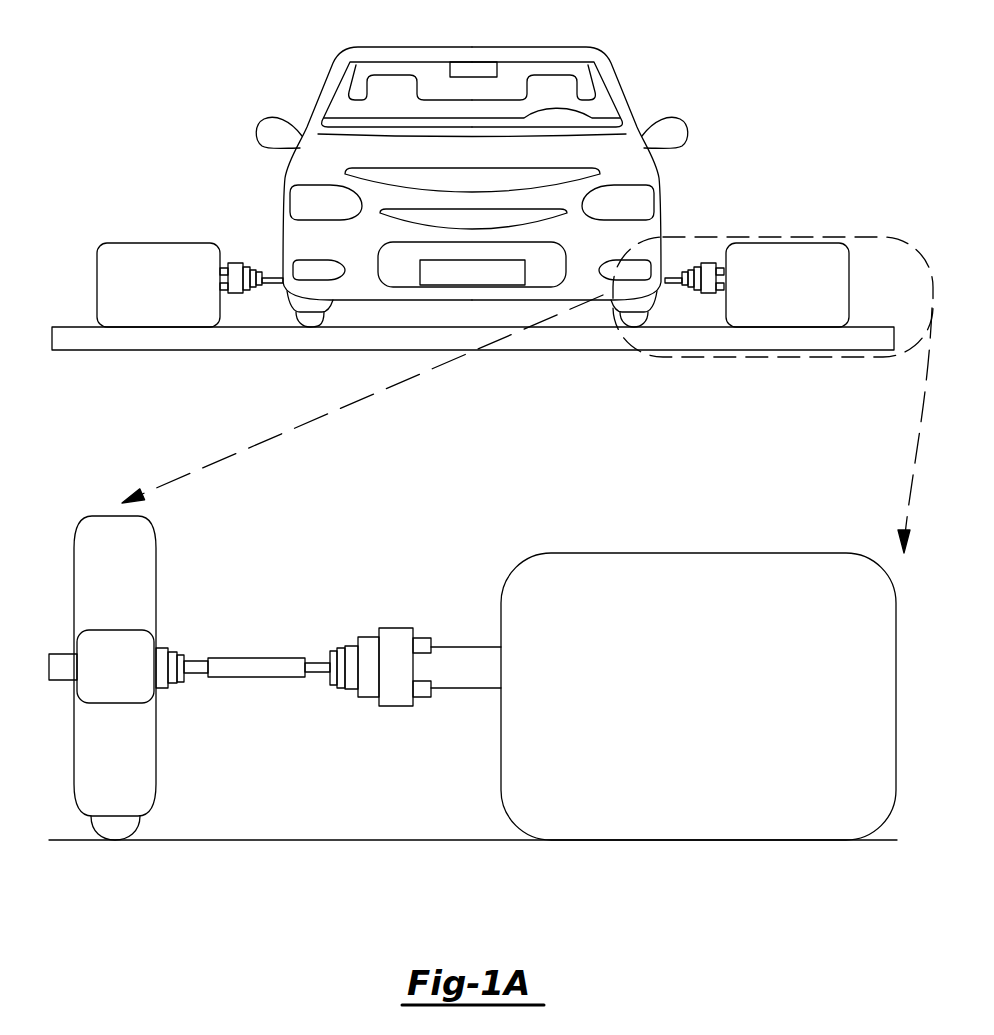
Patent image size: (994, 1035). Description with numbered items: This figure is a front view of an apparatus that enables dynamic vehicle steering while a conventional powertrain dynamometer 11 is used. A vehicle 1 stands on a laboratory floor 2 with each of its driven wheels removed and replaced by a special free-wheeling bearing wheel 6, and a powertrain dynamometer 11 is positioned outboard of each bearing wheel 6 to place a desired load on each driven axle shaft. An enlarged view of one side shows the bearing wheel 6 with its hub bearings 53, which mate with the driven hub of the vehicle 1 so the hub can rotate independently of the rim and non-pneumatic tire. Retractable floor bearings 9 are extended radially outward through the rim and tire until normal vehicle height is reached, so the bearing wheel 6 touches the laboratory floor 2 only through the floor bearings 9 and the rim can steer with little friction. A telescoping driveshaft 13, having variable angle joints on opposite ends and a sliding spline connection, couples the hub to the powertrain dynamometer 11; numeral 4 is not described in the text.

The vehicle 1 is at (412, 55).
The laboratory floor 2 is at (165, 350).
The wheel 4 is at (113, 612).
The bearing wheel 6 is at (285, 300).
The floor bearings 9 is at (318, 318).
The powertrain dynamometer 11 is at (171, 262).
The telescoping driveshaft 13 is at (406, 725).
The hub bearings 53 is at (82, 702).